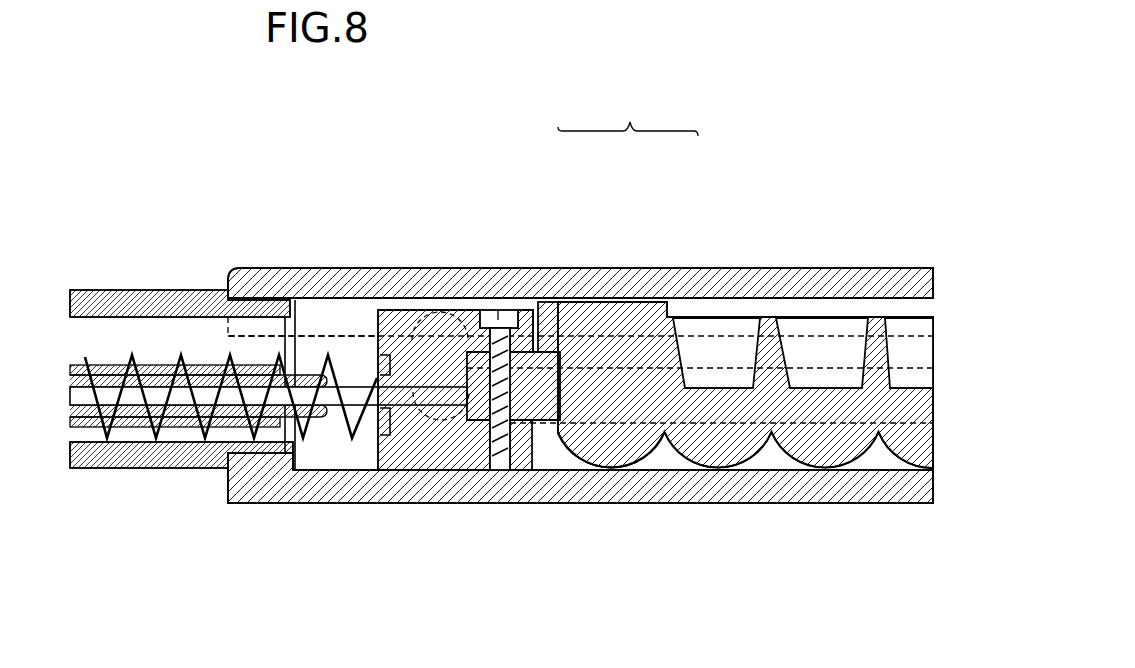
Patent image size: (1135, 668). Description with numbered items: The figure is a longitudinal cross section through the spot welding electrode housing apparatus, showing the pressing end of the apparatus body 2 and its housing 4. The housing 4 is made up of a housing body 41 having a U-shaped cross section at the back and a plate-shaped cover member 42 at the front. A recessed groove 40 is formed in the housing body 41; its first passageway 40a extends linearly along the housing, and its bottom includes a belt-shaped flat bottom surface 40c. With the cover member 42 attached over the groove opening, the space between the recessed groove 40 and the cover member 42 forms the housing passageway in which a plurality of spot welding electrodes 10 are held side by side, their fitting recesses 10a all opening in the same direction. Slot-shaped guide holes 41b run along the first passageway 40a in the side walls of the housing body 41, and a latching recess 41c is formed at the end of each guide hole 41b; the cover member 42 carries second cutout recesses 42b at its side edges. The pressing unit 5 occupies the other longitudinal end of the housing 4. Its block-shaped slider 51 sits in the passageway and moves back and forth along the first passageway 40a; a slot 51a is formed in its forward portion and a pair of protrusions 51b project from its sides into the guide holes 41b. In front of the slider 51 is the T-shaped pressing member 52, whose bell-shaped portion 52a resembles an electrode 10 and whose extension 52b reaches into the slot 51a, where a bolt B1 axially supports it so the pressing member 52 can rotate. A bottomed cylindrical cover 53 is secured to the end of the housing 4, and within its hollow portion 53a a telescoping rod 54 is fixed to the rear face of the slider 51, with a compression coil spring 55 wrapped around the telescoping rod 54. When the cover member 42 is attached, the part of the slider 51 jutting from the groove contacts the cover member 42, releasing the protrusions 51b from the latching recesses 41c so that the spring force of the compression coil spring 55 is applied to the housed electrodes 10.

The apparatus body 2 is at (818, 94).
The housing 4 is at (580, 396).
The pressing unit 5 is at (142, 256).
The spot welding electrode 10 is at (684, 450).
The fitting recess 10a is at (896, 322).
The recessed groove 40 is at (543, 450).
The first passageway 40a is at (768, 460).
The flat bottom surface 40c is at (668, 450).
The housing body 41 is at (332, 516).
The guide hole 41b is at (564, 457).
The latching recess 41c is at (380, 332).
The cover member 42 is at (316, 256).
The second cutout recess 42b is at (428, 312).
The slider 51 is at (457, 355).
The slot 51a is at (540, 310).
The protrusion 51b is at (413, 362).
The pressing member 52 is at (621, 257).
The bell-shaped portion 52a is at (645, 302).
The extension 52b is at (552, 304).
The cylindrical cover 53 is at (105, 470).
The hollow portion 53a is at (187, 317).
The telescoping rod 54 is at (182, 448).
The compression coil spring 55 is at (130, 355).
The bolt B1 is at (500, 312).